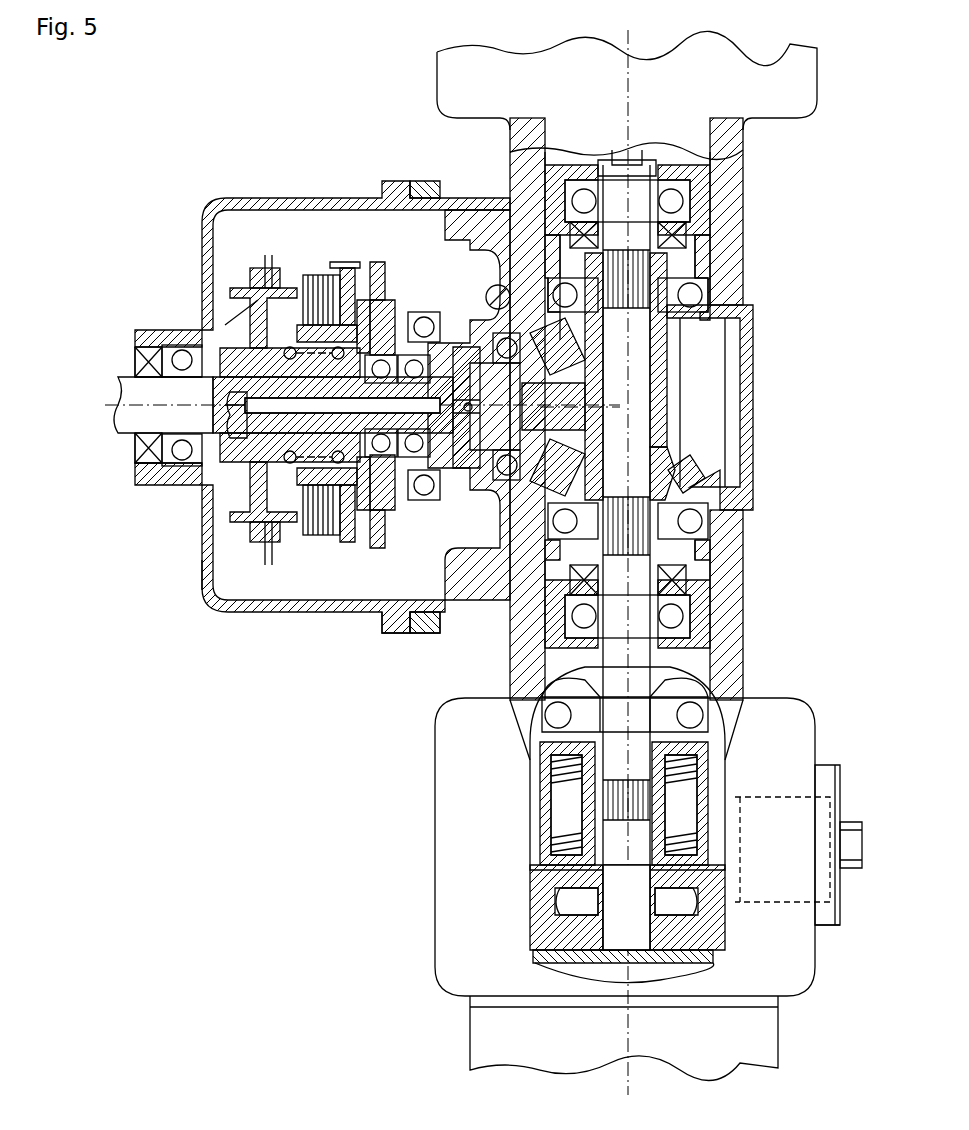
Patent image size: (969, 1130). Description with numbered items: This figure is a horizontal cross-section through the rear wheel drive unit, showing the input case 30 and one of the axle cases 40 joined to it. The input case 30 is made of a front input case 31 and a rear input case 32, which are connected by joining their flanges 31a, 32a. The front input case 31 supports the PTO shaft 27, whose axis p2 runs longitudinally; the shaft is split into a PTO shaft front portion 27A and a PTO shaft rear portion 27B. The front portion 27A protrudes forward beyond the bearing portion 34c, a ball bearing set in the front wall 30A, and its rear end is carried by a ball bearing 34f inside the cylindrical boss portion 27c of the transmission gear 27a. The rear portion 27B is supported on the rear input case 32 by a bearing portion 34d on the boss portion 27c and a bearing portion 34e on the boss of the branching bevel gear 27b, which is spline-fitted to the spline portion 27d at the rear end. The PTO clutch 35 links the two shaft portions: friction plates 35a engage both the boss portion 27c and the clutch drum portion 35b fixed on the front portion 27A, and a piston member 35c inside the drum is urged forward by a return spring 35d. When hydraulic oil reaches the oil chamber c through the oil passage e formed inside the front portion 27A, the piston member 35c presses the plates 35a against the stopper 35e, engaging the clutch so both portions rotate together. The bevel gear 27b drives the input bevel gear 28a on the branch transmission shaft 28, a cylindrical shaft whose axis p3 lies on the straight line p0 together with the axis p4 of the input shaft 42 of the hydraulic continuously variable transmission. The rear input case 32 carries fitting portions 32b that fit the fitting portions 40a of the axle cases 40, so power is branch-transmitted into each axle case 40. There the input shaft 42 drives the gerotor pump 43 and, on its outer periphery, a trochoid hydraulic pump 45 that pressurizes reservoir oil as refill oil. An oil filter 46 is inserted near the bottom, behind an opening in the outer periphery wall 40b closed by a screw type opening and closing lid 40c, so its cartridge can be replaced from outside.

The straight line p0 is at (624, 562).
The axis of the PTO shaft p2 is at (361, 373).
The axis of the branch transmission shaft p3 is at (627, 382).
The axis of the input shaft p4 is at (611, 535).
The axle case 40 is at (592, 555).
The fitting portion 40a is at (670, 407).
The outer periphery wall 40b is at (834, 812).
The opening and closing lid 40c is at (838, 948).
The input case 30 is at (485, 557).
The front wall 30A is at (163, 575).
The front input case 31 is at (354, 383).
The flange 31a is at (375, 644).
The rear input case 32 is at (461, 406).
The flange 32a is at (430, 645).
The fitting portion 32b is at (671, 400).
The PTO shaft 27 is at (280, 409).
The PTO shaft front portion 27A is at (280, 448).
The PTO shaft rear portion 27B is at (692, 550).
The transmission gear 27a is at (389, 432).
The branching bevel gear 27b is at (517, 377).
The cylindrical boss portion 27c is at (442, 371).
The spline portion 27d is at (680, 462).
The branch transmission shaft 28 is at (726, 407).
The input bevel gear 28a is at (733, 469).
The bearing portion 34c is at (168, 383).
The bearing portion 34d is at (446, 459).
The bearing portion 34e is at (486, 419).
The ball bearing 34f is at (350, 438).
The PTO clutch 35 is at (337, 436).
The friction plates 35a is at (324, 380).
The clutch drum portion 35b is at (254, 424).
The piston member 35c is at (286, 384).
The return spring 35d is at (249, 448).
The stopper 35e is at (359, 383).
The input shaft 42 is at (619, 426).
The pump 43 is at (599, 768).
The hydraulic pump 45 is at (612, 972).
The oil filter 46 is at (798, 878).
The oil chamber c is at (233, 328).
The oil passage e is at (229, 405).